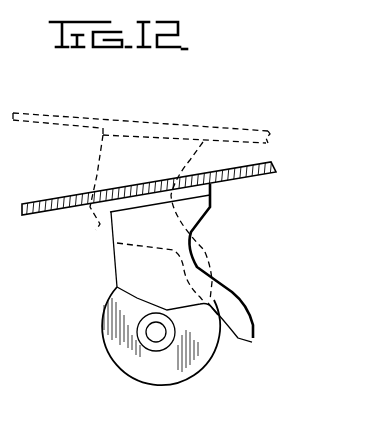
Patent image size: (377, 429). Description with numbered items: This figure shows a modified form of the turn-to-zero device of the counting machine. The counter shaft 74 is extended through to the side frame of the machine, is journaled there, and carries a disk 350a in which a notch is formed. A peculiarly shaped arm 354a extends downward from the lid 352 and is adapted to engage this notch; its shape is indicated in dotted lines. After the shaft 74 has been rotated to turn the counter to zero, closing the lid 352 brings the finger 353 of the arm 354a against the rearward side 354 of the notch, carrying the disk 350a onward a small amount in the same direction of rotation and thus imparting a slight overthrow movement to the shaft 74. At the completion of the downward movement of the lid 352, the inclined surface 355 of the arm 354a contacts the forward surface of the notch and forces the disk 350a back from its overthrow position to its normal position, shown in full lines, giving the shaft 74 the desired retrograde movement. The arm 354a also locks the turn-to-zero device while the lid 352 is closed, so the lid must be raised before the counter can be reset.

The lid 352 is at (61, 189).
The inclined surface 355 is at (101, 223).
The bracket portion 354a is at (159, 222).
The rearward side of the notch 354 is at (201, 306).
The finger 353 is at (268, 327).
The disk 350a is at (103, 315).
The counter shaft 74 is at (155, 331).